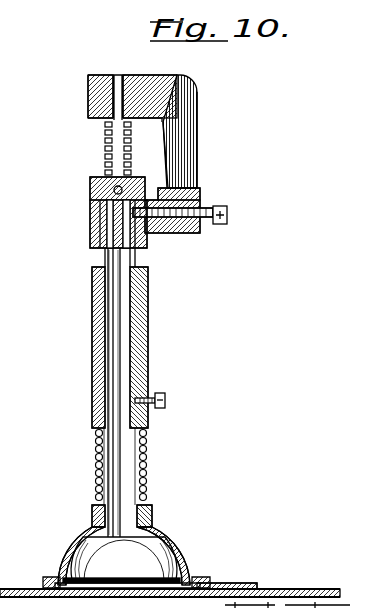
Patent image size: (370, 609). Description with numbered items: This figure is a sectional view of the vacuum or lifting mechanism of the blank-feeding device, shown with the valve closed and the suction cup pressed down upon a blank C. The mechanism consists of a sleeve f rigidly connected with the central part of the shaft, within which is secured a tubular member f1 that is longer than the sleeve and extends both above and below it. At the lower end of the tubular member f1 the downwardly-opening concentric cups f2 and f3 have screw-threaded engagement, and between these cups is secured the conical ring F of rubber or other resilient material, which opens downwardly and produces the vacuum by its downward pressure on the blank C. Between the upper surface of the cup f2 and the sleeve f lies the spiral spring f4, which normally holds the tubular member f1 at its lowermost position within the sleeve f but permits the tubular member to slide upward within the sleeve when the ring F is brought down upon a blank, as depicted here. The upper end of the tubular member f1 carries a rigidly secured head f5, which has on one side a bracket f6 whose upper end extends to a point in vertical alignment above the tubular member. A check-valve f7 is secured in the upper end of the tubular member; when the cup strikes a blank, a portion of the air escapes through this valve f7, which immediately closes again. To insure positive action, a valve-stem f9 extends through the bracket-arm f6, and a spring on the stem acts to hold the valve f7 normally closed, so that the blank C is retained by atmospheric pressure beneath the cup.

The sleeve f is at (148, 346).
The tubular member f1 is at (105, 257).
The cup f2 is at (182, 543).
The cup f3 is at (166, 545).
The spiral spring f4 is at (148, 457).
The head f5 is at (92, 212).
The bracket f6 is at (193, 145).
The valve f7 is at (108, 180).
The valve-stem f9 is at (119, 74).
The conical ring F is at (240, 587).
The blank C is at (302, 590).